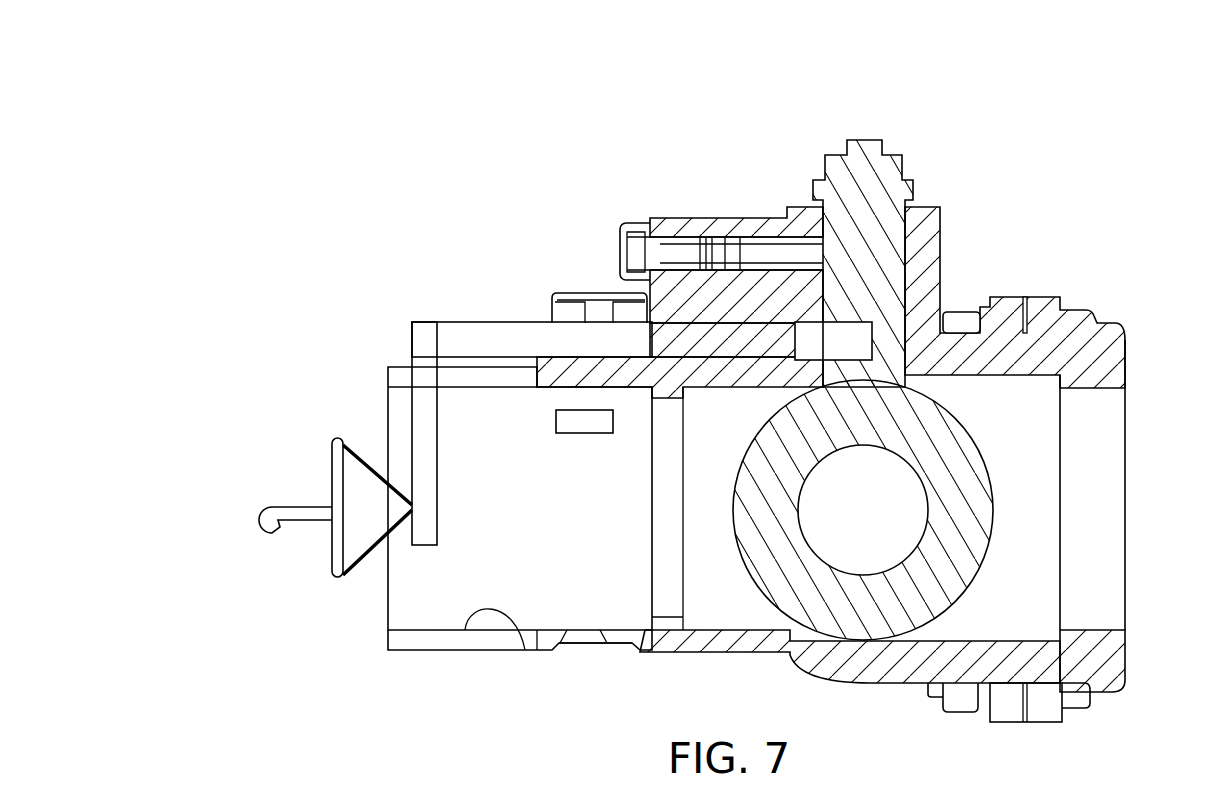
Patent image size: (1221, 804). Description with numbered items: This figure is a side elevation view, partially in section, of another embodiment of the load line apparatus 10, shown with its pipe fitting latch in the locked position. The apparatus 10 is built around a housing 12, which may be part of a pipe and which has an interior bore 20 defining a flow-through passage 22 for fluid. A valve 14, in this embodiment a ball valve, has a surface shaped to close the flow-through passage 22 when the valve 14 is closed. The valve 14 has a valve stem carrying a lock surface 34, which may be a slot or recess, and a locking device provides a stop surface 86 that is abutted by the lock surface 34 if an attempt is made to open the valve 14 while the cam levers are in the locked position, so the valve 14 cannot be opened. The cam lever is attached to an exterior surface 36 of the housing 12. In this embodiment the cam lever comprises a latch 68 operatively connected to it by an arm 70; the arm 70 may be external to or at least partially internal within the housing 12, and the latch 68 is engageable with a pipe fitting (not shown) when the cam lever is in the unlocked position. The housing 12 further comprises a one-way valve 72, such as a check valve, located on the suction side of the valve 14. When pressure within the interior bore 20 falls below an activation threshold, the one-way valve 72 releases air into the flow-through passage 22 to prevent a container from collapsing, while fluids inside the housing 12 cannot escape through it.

The load line apparatus 10 is at (330, 168).
The housing 12 is at (440, 650).
The valve 14 is at (993, 478).
The interior bore 20 is at (525, 650).
The flow-through passage 22 is at (567, 539).
The lock surface 34 is at (846, 360).
The exterior surface 36 is at (610, 643).
The latch 68 is at (306, 483).
The arm 70 is at (403, 412).
The one-way valve 72 is at (556, 410).
The stop surface 86 is at (840, 334).